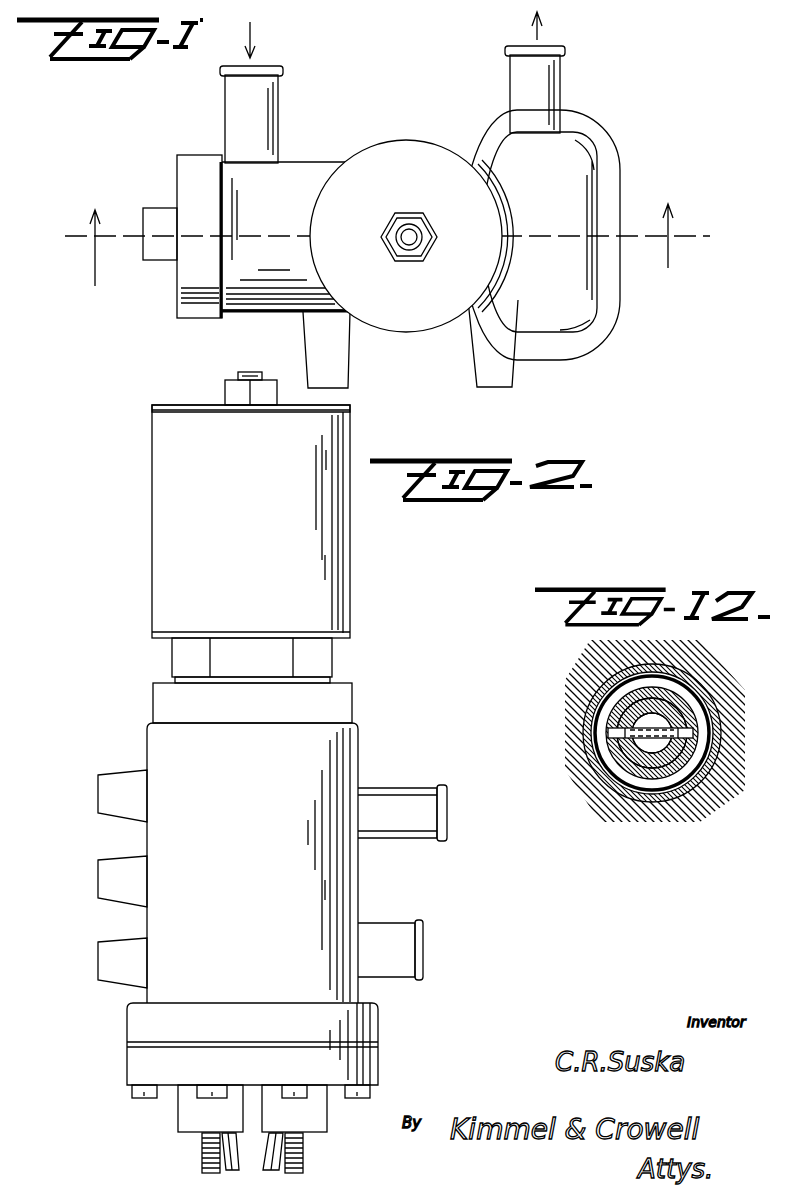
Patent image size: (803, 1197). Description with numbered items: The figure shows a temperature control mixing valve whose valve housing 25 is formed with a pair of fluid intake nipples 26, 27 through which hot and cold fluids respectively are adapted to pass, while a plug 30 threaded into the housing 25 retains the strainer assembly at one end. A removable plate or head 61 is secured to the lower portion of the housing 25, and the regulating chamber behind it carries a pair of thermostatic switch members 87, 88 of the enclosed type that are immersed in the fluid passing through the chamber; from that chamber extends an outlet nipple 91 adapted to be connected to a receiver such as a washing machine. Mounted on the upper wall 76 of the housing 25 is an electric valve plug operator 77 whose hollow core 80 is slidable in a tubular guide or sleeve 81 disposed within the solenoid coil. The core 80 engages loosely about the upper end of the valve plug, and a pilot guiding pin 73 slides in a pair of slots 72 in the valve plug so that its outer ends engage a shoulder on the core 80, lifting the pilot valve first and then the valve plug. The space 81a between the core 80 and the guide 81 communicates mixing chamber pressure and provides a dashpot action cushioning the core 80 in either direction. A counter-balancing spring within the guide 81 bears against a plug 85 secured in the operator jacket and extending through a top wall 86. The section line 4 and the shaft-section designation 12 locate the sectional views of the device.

In FIG. 1, the section line 4- 4 is at (382, 245).
In FIG. 12, the shaft 12 is at (652, 752).
In FIG. 1, the valve housing 25 is at (166, 303).
In FIG. 1, the fluid intake nipple 26 is at (280, 119).
In FIG. 2, the fluid intake nipple 26 is at (417, 840).
In FIG. 2, the fluid intake nipple 27 is at (393, 927).
In FIG. 1, the plug 30 is at (143, 220).
In FIG. 2, the removable plate or head 61 is at (378, 1081).
In FIG. 12, the slots 72 is at (629, 758).
In FIG. 12, the pilot guiding pin 73 is at (617, 736).
In FIG. 1, the upper wall 76 is at (541, 235).
In FIG. 2, the upper wall 76 is at (325, 722).
In FIG. 2, the electric valve plug operator 77 is at (362, 571).
In FIG. 12, the hollow core 80 is at (694, 703).
In FIG. 12, the tubular guide or sleeve 81 is at (710, 733).
In FIG. 12, the space or passage 81a is at (697, 768).
In FIG. 1, the plug 85 is at (410, 246).
In FIG. 2, the plug 85 is at (248, 372).
In FIG. 1, the top wall 86 is at (390, 153).
In FIG. 2, the top wall 86 is at (350, 409).
In FIG. 2, the thermostatic switch member 87 is at (313, 1108).
In FIG. 2, the thermostatic switch member 88 is at (182, 1106).
In FIG. 1, the outlet nipple 91 is at (560, 88).
In FIG. 2, the outlet nipple 91 is at (398, 787).